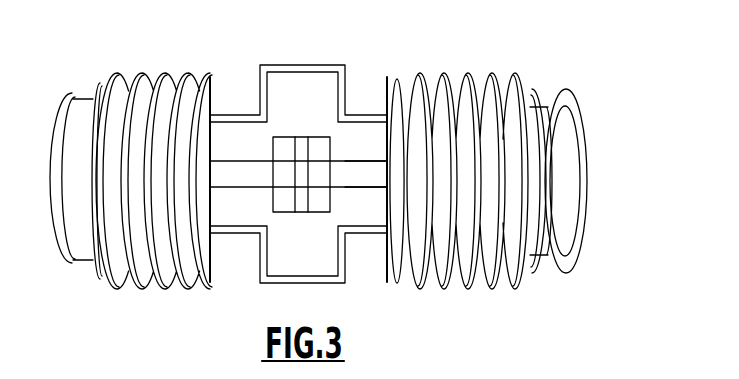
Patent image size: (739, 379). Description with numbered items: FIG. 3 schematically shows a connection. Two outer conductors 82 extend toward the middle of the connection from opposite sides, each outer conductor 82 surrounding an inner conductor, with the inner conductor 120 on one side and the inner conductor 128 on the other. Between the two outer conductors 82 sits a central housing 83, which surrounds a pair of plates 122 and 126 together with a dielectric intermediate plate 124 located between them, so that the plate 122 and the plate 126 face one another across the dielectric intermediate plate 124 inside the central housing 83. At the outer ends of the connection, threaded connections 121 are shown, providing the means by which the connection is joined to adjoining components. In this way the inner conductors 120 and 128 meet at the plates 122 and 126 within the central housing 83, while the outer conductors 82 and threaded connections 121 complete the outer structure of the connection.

The outer conductor 82 is at (373, 118).
The central housing 83 is at (313, 279).
The inner conductor 120 is at (237, 170).
The threaded connection 121 is at (122, 122).
The plate 122 is at (278, 150).
The dielectric intermediate plate 124 is at (303, 140).
The plate 126 is at (327, 145).
The inner conductor 128 is at (363, 177).